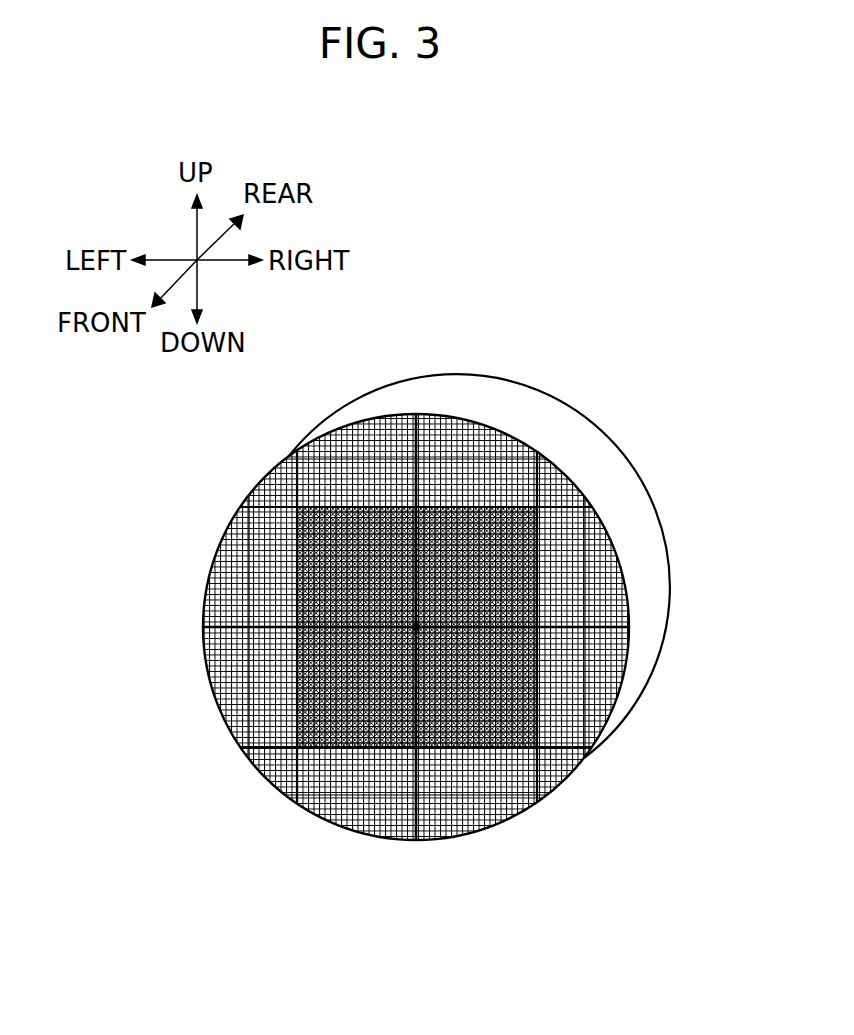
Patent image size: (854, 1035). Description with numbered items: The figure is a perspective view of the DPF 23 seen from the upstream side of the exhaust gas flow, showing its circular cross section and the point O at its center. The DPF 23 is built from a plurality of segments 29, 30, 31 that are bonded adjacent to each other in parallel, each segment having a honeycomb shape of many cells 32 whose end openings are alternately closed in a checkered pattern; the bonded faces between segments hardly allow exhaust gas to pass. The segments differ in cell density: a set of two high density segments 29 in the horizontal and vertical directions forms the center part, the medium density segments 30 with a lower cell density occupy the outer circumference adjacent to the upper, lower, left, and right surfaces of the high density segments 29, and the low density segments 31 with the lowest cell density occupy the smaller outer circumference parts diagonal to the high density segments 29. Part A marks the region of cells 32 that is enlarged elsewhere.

The DPF 23 is at (223, 492).
The high density segment 29 is at (377, 588).
The medium density segment 30 is at (357, 425).
The low density segment 31 is at (255, 488).
The cell 32 is at (220, 710).
The part A is at (256, 767).
The center O is at (404, 644).